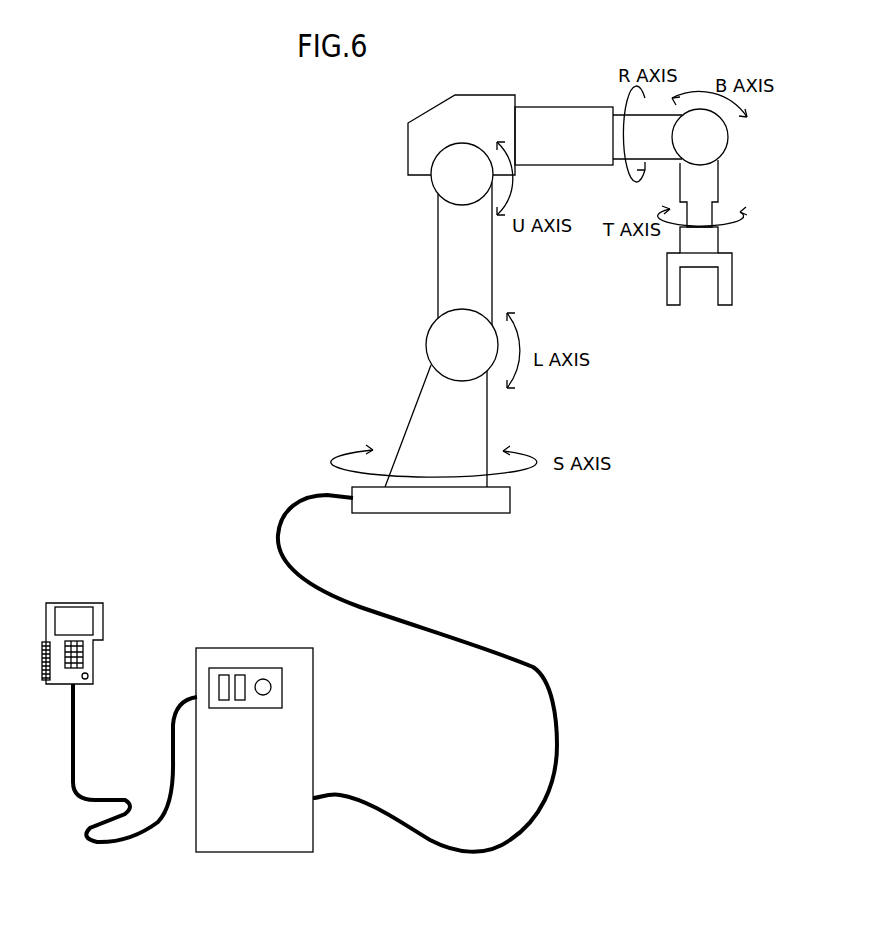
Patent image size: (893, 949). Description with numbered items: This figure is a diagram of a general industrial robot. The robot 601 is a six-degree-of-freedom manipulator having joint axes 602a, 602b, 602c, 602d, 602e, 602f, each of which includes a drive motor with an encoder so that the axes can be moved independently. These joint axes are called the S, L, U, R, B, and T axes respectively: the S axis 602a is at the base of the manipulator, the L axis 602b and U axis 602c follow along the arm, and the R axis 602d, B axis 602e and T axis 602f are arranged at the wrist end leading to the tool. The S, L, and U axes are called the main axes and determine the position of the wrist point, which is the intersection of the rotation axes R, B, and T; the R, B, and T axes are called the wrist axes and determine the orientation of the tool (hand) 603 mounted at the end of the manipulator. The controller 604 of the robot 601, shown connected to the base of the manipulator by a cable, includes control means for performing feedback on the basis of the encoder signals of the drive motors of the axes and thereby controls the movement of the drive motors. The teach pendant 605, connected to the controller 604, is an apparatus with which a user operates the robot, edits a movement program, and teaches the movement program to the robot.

The robot 601 is at (428, 122).
The joint axis (S axis) 602a is at (463, 499).
The joint axis (L axis) 602b is at (436, 338).
The joint axis (U axis) 602c is at (430, 182).
The joint axis (R axis) 602d is at (606, 157).
The joint axis (B axis) 602e is at (712, 143).
The joint axis (T axis) 602f is at (713, 193).
The tool (hand) 603 is at (697, 254).
The controller 604 is at (283, 652).
The teach pendant 605 is at (66, 615).